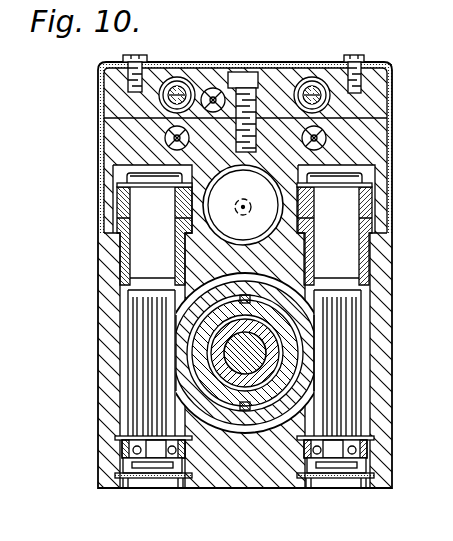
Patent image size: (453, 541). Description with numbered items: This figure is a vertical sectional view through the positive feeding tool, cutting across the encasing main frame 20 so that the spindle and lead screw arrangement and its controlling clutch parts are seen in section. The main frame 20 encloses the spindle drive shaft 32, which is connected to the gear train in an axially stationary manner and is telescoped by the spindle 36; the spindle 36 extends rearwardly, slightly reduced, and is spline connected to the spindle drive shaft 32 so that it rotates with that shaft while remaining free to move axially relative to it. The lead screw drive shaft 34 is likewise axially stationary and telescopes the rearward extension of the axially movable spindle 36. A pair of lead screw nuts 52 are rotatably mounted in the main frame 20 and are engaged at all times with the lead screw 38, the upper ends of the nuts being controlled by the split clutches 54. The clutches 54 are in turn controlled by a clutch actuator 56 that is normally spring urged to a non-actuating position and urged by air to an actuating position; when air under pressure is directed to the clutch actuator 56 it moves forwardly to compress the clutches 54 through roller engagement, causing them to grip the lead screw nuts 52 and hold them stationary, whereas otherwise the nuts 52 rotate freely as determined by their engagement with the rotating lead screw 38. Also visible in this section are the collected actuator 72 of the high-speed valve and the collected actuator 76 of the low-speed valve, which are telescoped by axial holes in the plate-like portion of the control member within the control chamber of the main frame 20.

The main frame 20 is at (97, 338).
The spindle drive shaft 32 is at (263, 345).
The lead screw drive shaft 34 is at (222, 378).
The spindle 36 is at (237, 358).
The lead screw 38 is at (249, 412).
The lead screw nuts 52 is at (138, 418).
The split clutches 54 is at (115, 203).
The clutch actuator 56 is at (226, 228).
The collected actuator 72 is at (316, 76).
The collected actuator 76 is at (177, 77).